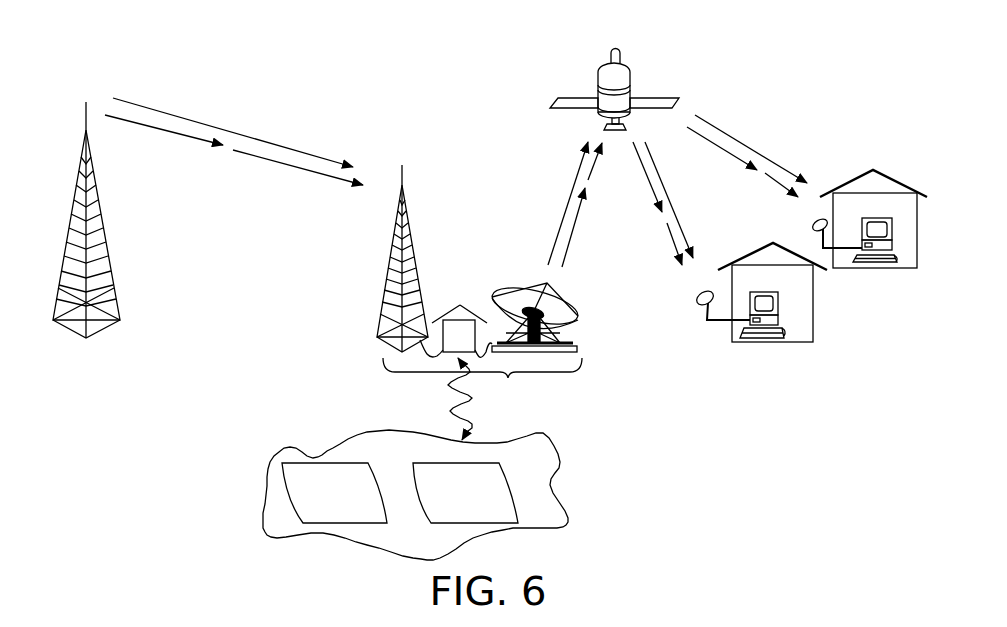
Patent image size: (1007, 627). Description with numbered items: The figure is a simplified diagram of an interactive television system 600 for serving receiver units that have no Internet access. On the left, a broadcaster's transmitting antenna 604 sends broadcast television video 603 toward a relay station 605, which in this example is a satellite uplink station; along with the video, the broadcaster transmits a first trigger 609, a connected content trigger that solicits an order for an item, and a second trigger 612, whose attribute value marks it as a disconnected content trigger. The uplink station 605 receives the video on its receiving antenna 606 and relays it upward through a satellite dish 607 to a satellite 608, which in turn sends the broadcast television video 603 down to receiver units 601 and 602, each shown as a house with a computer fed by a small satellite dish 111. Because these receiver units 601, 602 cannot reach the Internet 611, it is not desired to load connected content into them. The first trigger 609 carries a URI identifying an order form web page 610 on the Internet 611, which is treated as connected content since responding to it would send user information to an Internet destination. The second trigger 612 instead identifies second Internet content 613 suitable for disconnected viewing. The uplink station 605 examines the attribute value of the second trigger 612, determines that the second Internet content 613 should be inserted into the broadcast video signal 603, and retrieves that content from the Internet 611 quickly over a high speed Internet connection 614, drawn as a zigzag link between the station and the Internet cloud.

The system 600 is at (422, 118).
The transmitting antenna 604 is at (86, 115).
The broadcast television video 603 is at (758, 138).
The second trigger 612 is at (182, 136).
The first trigger 609 is at (293, 167).
The receiving antenna 606 is at (402, 172).
The satellite 608 is at (632, 75).
The satellite dish 607 is at (572, 308).
The relay station 605 is at (508, 378).
The high speed Internet connection 614 is at (437, 399).
The Internet 611 is at (270, 460).
The order form web page 610 is at (372, 465).
The second Internet content 613 is at (594, 163).
The receiver unit 601 is at (892, 240).
The small satellite dish 111 is at (813, 227).
The receiver unit 602 is at (780, 312).